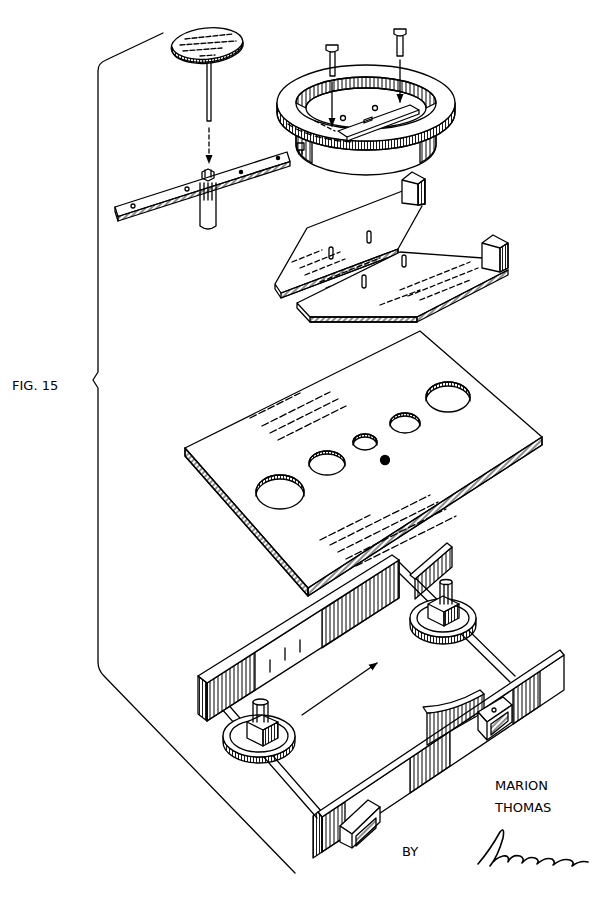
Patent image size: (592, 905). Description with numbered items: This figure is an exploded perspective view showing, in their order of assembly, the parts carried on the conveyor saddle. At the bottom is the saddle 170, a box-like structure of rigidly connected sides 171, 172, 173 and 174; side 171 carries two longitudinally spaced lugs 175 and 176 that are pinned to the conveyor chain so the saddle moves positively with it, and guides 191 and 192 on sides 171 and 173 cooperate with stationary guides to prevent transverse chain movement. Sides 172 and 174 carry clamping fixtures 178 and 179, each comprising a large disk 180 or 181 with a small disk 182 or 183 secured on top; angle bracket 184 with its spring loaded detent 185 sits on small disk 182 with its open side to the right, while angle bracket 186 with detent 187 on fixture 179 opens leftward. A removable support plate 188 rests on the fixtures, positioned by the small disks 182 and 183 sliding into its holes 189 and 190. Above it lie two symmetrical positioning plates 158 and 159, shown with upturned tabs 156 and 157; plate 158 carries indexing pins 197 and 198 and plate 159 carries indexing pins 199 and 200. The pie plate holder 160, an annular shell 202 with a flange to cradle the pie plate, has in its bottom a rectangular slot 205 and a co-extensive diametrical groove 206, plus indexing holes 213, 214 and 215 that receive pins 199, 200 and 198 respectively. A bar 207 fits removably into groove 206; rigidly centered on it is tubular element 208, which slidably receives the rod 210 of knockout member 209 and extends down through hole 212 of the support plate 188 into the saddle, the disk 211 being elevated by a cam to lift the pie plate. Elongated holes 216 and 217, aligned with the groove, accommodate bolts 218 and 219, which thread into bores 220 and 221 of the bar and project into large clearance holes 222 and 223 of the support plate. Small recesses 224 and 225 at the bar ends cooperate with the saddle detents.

The upturned tab of lower slide plate 156 is at (508, 245).
The upturned tab of upper slide plate 157 is at (419, 176).
The positioning plate 158 is at (463, 286).
The positioning plate 159 is at (409, 213).
The pie plate holder 160 is at (425, 71).
The saddle 170 is at (381, 697).
The side 171 is at (402, 789).
The side 172 is at (300, 772).
The side 173 is at (250, 651).
The side 174 is at (433, 582).
The lug 175 is at (366, 843).
The lug 176 is at (508, 729).
The clamping fixture 178 is at (267, 732).
The clamping fixture 179 is at (467, 626).
The large disk 180 is at (235, 748).
The large disk 181 is at (478, 625).
The small disk 182 is at (252, 740).
The small disk 183 is at (437, 629).
The angle bracket 184 is at (277, 717).
The spring loaded detent 185 is at (265, 700).
The angle bracket 186 is at (458, 598).
The detent 187 is at (418, 634).
The support plate 188 is at (520, 428).
The hole 189 is at (271, 478).
The hole 190 is at (445, 389).
The guide 191 is at (445, 707).
The guide 192 is at (453, 544).
The indexing pin 197 is at (368, 283).
The indexing pin 198 is at (407, 256).
The indexing pin 199 is at (331, 246).
The indexing pin 200 is at (370, 230).
The annular shell 202 is at (347, 167).
The rectangular slot 205 is at (367, 116).
The diametrical groove 206 is at (301, 152).
The bar 207 is at (165, 205).
The tubular element 208 is at (218, 214).
The knockout member 209 is at (248, 46).
The rod 210 is at (213, 95).
The disk 211 is at (228, 35).
The hole 212 is at (365, 435).
The indexing hole 213 is at (343, 115).
The indexing hole 214 is at (375, 105).
The indexing hole 215 is at (433, 125).
The elongated hole 216 is at (404, 108).
The elongated hole 217 is at (284, 127).
The bolt 218 is at (409, 30).
The bolt 219 is at (329, 47).
The threaded bore 220 is at (243, 175).
The threaded bore 221 is at (187, 186).
The clearance hole 222 is at (421, 426).
The clearance hole 223 is at (333, 469).
The small recess 224 is at (276, 158).
The small recess 225 is at (133, 210).